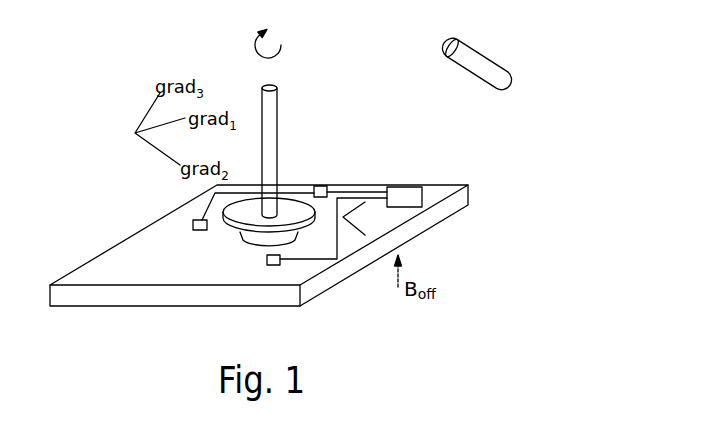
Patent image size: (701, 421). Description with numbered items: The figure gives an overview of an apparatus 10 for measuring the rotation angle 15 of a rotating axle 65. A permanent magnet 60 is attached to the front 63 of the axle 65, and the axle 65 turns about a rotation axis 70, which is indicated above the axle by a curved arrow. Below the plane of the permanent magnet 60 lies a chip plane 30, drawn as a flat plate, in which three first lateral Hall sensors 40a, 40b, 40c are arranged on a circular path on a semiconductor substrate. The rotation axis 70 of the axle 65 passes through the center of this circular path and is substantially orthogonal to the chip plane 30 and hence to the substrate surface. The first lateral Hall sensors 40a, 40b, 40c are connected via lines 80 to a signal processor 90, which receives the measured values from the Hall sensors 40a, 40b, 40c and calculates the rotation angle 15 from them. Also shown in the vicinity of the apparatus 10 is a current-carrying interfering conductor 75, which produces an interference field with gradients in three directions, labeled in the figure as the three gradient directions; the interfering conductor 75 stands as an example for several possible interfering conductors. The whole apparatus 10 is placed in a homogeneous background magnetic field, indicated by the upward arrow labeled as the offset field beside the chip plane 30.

The apparatus 10 is at (388, 163).
The rotation angle 15 is at (360, 218).
The chip plane 30 is at (468, 185).
The first lateral Hall sensor 40a is at (273, 265).
The first lateral Hall sensor 40b is at (192, 238).
The first lateral Hall sensor 40c is at (322, 185).
The permanent magnet 60 is at (288, 205).
The front of the axle 63 is at (247, 233).
The axle 65 is at (270, 87).
The rotation axis 70 is at (276, 35).
The interfering conductor 75 is at (472, 62).
The lines 80 is at (294, 226).
The signal processor 90 is at (404, 196).